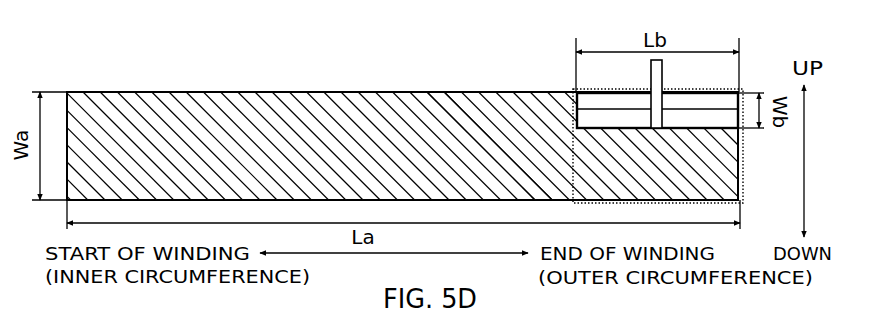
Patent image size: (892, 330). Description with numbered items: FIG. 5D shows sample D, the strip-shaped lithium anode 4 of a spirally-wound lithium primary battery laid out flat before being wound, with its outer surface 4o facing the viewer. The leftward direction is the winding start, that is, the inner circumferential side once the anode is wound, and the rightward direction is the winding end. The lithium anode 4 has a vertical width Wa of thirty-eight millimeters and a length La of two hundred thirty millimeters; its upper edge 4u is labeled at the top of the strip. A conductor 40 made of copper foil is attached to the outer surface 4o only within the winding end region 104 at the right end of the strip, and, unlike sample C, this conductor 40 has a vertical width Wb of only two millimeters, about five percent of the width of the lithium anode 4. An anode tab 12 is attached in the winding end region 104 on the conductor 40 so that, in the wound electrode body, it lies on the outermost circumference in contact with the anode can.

The lithium anode 4 is at (170, 102).
The upper edge of electrode plate 4u is at (333, 88).
The outer surface 4o is at (438, 118).
The anode tab 12 is at (651, 70).
The conductor 40 is at (737, 126).
The winding end region 104 is at (745, 203).